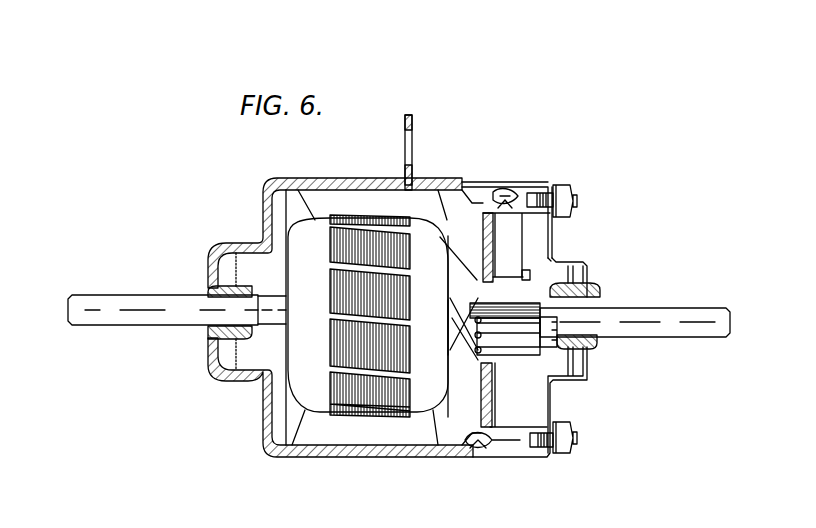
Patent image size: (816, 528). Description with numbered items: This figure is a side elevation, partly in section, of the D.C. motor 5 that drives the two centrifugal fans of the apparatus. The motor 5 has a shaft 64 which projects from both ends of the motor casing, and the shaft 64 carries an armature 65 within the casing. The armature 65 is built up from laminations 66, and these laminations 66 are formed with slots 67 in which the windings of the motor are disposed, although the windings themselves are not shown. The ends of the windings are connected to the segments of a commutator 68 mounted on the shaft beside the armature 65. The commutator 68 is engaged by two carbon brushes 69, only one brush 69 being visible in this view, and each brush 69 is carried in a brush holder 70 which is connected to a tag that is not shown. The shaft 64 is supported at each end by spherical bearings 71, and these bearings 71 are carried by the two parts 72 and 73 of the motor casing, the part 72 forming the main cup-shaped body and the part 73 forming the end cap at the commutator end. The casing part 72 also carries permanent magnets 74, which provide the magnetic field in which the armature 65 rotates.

The motor 5 is at (345, 307).
The shaft 64 is at (123, 316).
The armature 65 is at (293, 370).
The laminations 66 is at (332, 385).
The slots 67 is at (333, 257).
The commutator 68 is at (478, 277).
The carbon brush 69 is at (524, 273).
The brush holder 70 is at (502, 237).
The spherical bearing 71 is at (207, 333).
The part of the motor casing 72 is at (337, 178).
The part of the motor casing 73 is at (588, 261).
The permanent magnets 74 is at (377, 197).